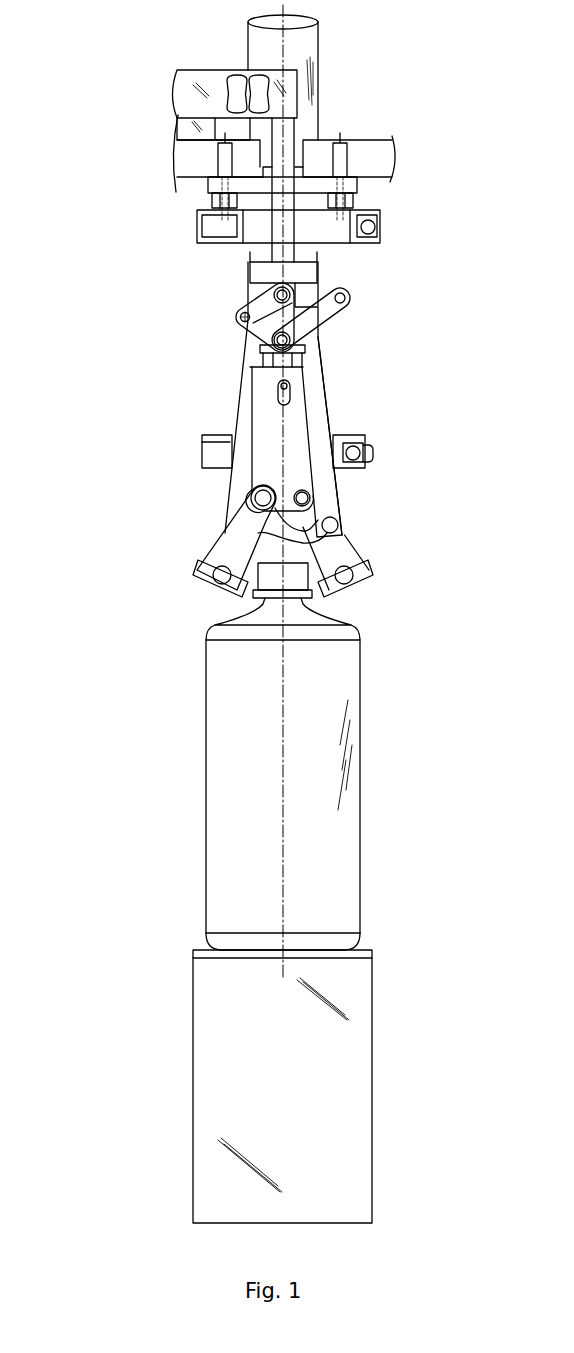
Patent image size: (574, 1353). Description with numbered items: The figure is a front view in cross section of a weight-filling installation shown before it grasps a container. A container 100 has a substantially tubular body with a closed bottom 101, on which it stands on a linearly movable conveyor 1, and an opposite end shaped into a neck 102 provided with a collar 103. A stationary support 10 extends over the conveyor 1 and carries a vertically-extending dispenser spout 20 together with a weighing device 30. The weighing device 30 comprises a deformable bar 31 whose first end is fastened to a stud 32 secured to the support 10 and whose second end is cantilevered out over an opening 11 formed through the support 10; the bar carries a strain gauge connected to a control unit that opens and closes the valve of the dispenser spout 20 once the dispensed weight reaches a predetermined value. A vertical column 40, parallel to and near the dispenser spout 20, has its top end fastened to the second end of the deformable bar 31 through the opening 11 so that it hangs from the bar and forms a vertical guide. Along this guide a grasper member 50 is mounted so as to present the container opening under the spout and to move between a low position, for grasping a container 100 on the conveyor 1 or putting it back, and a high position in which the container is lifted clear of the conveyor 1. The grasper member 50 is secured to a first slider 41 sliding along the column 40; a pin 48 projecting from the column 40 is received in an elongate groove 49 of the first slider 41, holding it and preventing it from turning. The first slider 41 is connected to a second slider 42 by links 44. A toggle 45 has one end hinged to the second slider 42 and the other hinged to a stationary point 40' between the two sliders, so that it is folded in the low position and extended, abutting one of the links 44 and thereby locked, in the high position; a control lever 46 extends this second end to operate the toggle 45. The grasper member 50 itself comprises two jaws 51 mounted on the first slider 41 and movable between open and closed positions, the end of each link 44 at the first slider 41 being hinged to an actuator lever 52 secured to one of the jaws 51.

The conveyor 1 is at (368, 950).
The support 10 is at (383, 160).
The opening 11 is at (297, 138).
The dispenser spout 20 is at (247, 252).
The weighing device 30 is at (143, 92).
The deformable bar 31 is at (213, 78).
The stud 32 is at (178, 127).
The vertical column 40 is at (326, 279).
The stationary point 40' is at (384, 436).
The first slider 41 is at (257, 382).
The second slider 42 is at (257, 290).
The links 44 is at (250, 350).
The toggle 45 is at (248, 322).
The control lever 46 is at (323, 317).
The pin 48 is at (290, 398).
The elongate groove 49 is at (250, 410).
The grasper member 50 is at (170, 533).
The jaws 51 is at (200, 558).
The actuator lever 52 is at (303, 527).
The container 100 is at (352, 693).
The bottom 101 is at (235, 953).
The neck 102 is at (265, 586).
The collar 103 is at (333, 613).